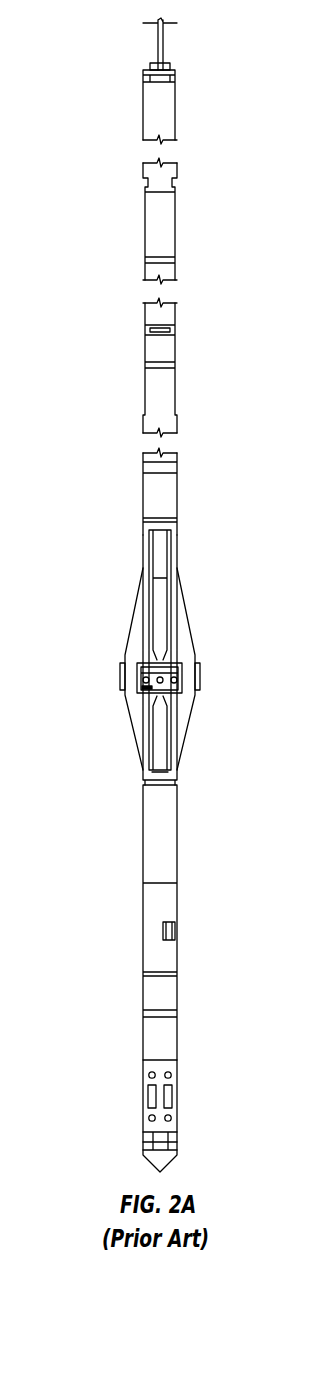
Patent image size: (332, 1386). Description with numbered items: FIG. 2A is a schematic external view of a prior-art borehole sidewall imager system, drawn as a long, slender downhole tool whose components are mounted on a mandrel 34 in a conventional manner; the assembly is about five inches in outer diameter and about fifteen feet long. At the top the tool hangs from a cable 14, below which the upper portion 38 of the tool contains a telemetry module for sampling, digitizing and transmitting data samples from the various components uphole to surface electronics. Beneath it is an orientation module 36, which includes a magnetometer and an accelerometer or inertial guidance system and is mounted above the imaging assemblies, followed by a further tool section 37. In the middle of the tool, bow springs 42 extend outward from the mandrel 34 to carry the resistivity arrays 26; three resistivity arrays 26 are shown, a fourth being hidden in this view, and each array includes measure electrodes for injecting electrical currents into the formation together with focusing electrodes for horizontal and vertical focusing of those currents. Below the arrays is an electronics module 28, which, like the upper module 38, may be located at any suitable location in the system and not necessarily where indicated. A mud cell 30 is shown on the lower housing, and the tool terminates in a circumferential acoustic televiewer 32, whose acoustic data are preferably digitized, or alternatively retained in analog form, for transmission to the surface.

The wireline cable 14 is at (163, 52).
The electronics module / upper portion 38 is at (177, 100).
The orientation module 36 is at (176, 235).
The tool section 37 is at (176, 395).
The mandrel 34 is at (178, 498).
The bow springs 42 is at (128, 618).
The resistivity arrays 26 is at (120, 668).
The electronics module 28 is at (178, 833).
The mud cell 30 is at (177, 929).
The circumferential acoustic televiewer 32 is at (178, 1097).